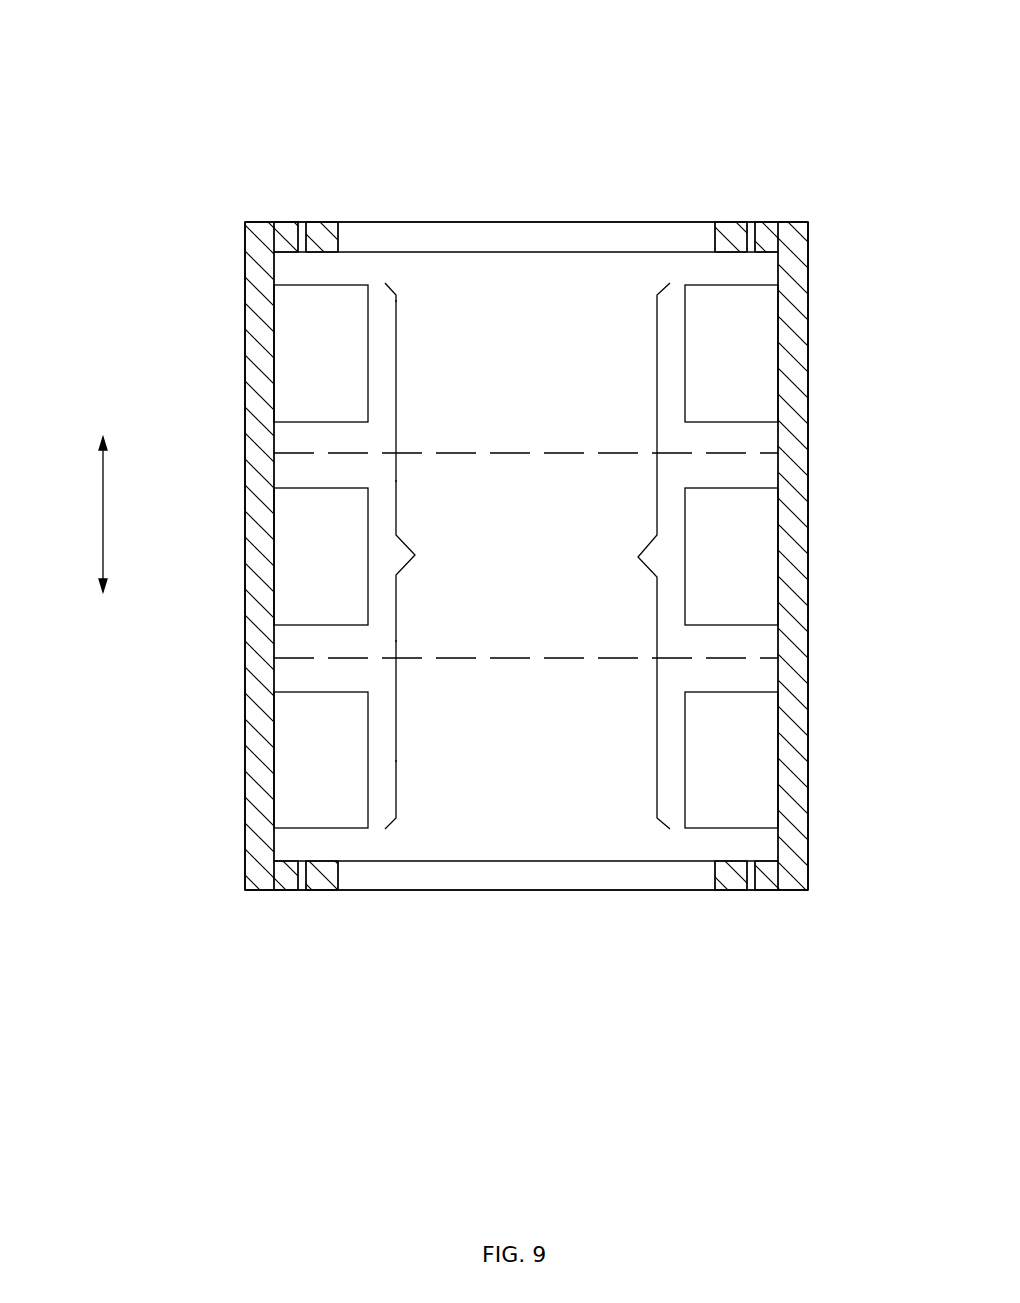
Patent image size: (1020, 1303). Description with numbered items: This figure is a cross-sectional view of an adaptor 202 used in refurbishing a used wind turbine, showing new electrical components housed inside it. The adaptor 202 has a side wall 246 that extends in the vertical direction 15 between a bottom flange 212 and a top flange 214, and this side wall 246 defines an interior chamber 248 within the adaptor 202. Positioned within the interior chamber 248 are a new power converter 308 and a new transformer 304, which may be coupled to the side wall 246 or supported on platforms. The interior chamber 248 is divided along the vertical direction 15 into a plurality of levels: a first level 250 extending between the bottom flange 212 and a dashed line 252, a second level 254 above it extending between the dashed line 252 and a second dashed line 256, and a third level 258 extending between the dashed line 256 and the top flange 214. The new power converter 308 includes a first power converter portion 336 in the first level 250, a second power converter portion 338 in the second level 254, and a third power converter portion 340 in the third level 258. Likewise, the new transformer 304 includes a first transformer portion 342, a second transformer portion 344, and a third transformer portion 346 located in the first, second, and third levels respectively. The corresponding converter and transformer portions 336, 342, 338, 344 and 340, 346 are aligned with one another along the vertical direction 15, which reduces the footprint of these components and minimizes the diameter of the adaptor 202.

The adaptor 202 is at (136, 49).
The vertical direction 15 is at (103, 515).
The top flange 214 is at (773, 222).
The bottom flange 212 is at (322, 878).
The side wall 246 is at (810, 455).
The new transformer 304 is at (625, 556).
The new power converter 308 is at (428, 556).
The first power converter portion 336 is at (310, 757).
The second power converter portion 338 is at (310, 557).
The third power converter portion 340 is at (300, 357).
The first transformer portion 342 is at (740, 763).
The second transformer portion 344 is at (748, 578).
The third transformer portion 346 is at (752, 378).
The interior chamber 248 is at (499, 628).
The first level 250 is at (470, 774).
The second level 254 is at (470, 506).
The third level 258 is at (470, 326).
The dashed line 252 is at (496, 658).
The dashed line 256 is at (468, 455).